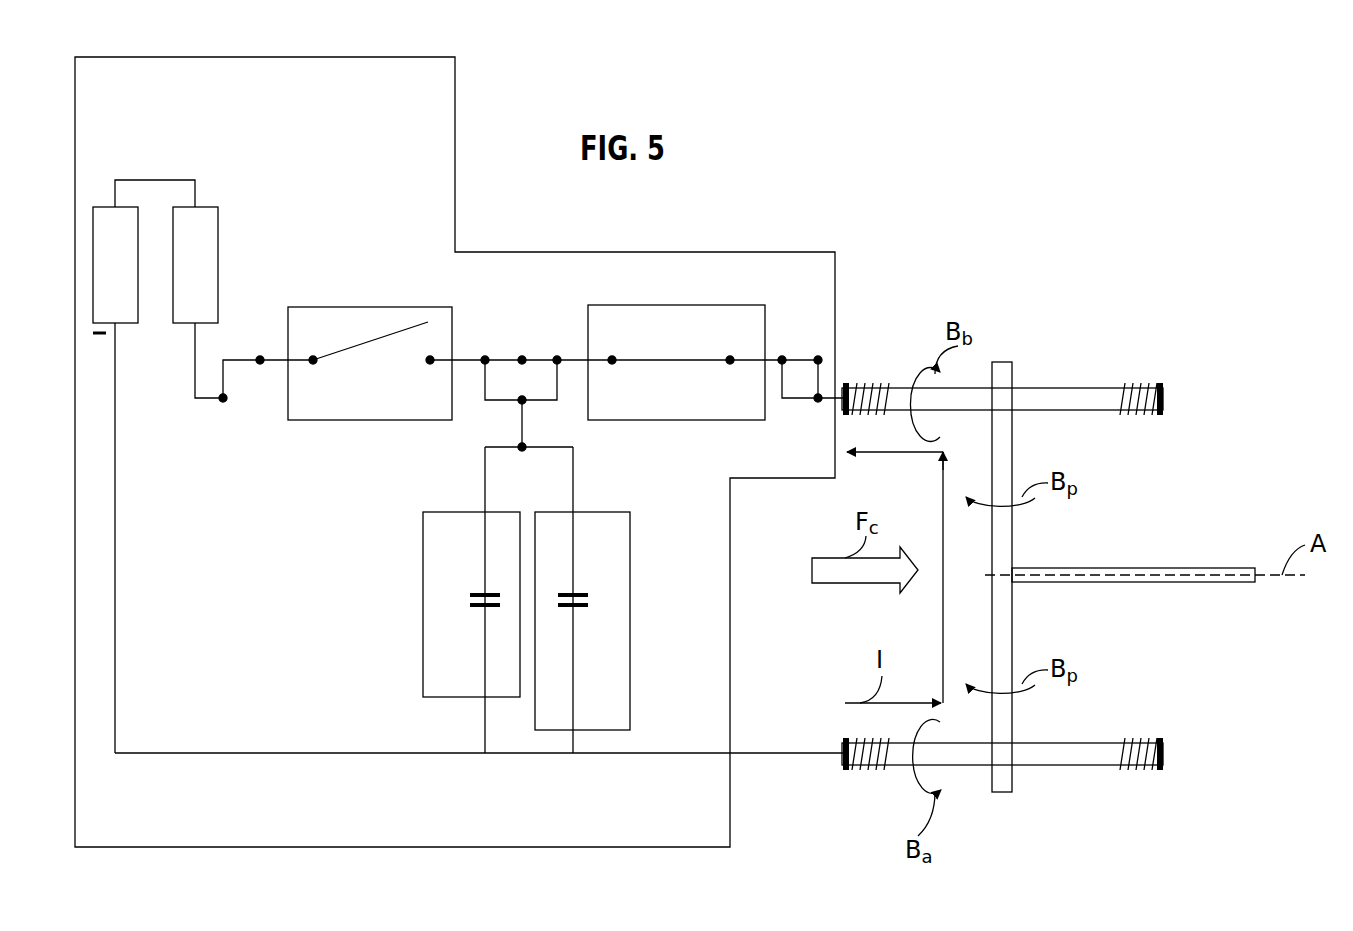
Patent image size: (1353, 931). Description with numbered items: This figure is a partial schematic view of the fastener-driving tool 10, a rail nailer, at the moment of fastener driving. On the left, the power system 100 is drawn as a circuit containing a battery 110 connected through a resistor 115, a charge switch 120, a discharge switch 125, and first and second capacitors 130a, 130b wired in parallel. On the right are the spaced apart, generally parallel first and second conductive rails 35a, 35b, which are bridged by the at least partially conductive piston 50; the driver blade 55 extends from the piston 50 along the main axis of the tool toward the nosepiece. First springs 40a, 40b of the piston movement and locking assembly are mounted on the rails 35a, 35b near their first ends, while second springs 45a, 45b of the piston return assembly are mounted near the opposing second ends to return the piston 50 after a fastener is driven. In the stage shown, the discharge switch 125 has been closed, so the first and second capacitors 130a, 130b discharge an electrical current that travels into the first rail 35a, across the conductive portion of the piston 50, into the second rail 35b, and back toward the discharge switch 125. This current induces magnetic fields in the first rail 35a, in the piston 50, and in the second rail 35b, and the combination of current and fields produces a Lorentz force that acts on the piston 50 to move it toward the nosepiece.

The fastener-driving tool 10 is at (1087, 147).
The first conductive rail 35a is at (1048, 768).
The second conductive rail 35b is at (1043, 395).
The first spring 40a is at (856, 770).
The first spring 40b is at (863, 388).
The second spring 45a is at (1135, 770).
The second spring 45b is at (1138, 388).
The piston 50 is at (1000, 632).
The driver blade 55 is at (1197, 578).
The power system 100 is at (450, 52).
The battery 110 is at (128, 323).
The resistor 115 is at (218, 240).
The charge switch 120 is at (380, 307).
The discharge switch 125 is at (680, 305).
The first capacitor 130a is at (423, 650).
The second capacitor 130b is at (630, 650).